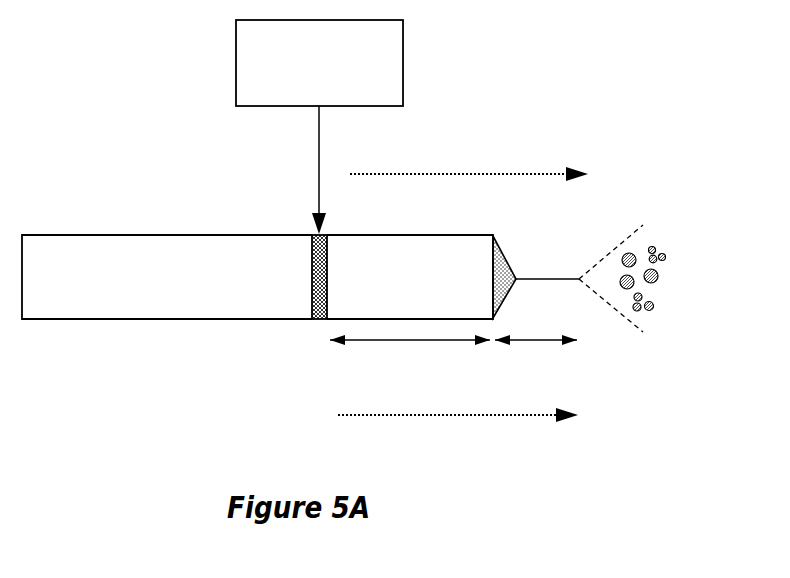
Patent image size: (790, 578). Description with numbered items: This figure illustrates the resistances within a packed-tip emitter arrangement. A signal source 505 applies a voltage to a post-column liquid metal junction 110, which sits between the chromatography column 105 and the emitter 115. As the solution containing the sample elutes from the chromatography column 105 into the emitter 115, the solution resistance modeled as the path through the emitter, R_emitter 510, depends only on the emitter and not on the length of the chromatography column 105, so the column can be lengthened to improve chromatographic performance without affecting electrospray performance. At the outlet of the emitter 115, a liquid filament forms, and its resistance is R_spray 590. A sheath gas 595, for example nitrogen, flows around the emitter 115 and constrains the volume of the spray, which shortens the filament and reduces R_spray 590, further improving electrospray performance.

The signal source 505 is at (319, 127).
The chromatography column 105 is at (167, 277).
The post-column liquid metal junction 110 is at (319, 320).
The emitter 115 is at (421, 277).
The R_emitter 510 is at (410, 355).
The R_spray 590 is at (538, 355).
The sheath gas 595 is at (463, 295).